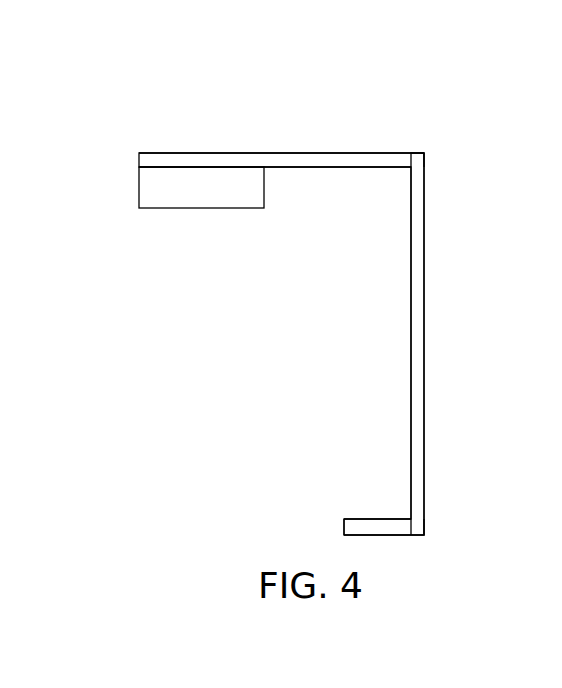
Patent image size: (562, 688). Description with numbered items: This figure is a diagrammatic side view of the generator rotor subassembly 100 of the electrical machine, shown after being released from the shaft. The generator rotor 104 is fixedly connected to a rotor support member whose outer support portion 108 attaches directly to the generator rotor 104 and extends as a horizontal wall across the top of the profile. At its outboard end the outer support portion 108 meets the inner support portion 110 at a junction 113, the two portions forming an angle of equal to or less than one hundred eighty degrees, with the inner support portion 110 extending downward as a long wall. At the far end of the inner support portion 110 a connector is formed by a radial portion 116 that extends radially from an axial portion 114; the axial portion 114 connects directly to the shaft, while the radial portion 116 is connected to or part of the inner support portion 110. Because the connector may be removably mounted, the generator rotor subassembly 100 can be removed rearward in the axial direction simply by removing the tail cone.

The generator rotor subassembly 100 is at (313, 135).
The generator rotor 104 is at (205, 153).
The outer support portion 108 is at (352, 153).
The inner support portion 110 is at (424, 350).
The junction 113 is at (427, 160).
The axial portion 114 is at (370, 519).
The radial portion 116 is at (424, 508).